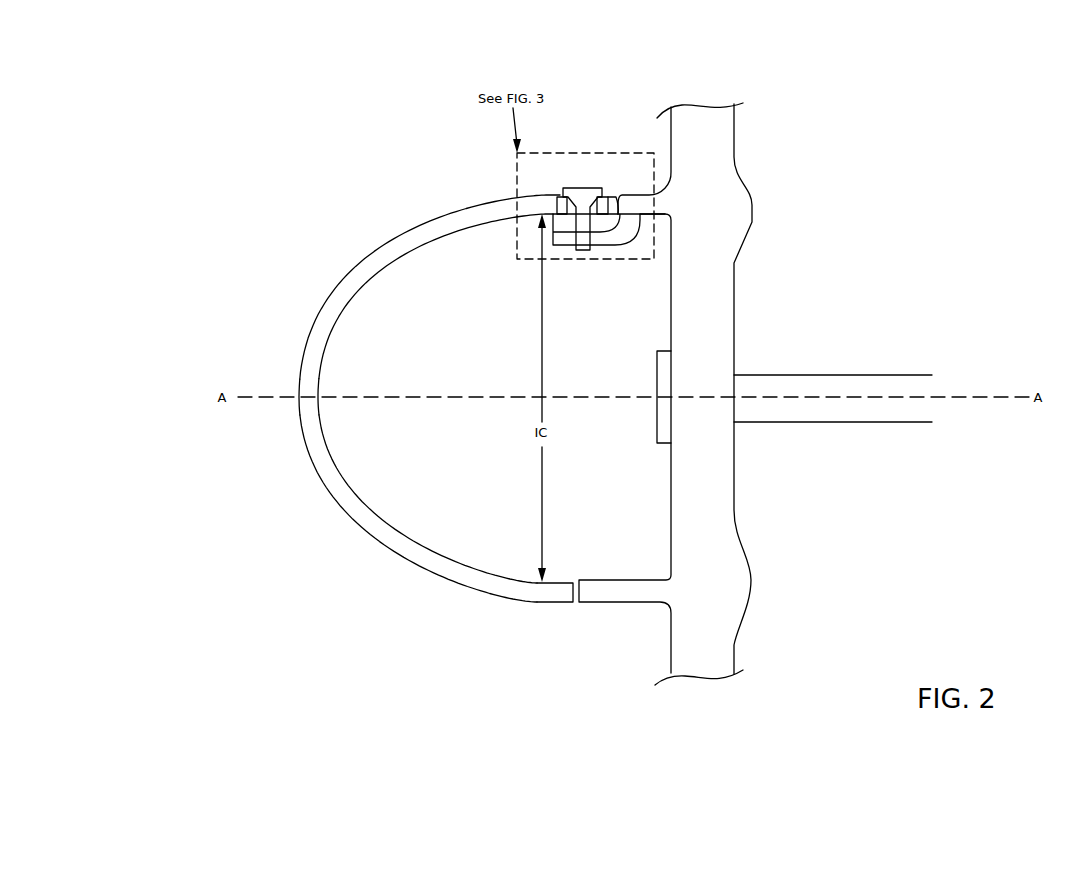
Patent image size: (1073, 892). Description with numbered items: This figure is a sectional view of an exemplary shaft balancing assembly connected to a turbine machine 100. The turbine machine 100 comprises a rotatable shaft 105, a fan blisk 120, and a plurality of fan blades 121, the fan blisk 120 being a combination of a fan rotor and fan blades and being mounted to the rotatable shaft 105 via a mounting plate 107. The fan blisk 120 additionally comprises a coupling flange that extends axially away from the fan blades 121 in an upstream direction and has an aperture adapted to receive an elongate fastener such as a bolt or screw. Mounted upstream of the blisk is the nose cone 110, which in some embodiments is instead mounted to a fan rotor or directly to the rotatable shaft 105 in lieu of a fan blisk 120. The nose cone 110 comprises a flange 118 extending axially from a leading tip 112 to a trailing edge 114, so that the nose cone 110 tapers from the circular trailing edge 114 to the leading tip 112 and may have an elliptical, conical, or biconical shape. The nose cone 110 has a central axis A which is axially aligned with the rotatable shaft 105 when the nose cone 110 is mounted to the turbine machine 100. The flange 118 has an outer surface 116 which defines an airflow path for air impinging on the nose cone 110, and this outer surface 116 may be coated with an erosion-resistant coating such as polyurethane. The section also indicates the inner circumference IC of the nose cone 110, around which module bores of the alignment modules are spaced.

The turbine machine 100 is at (860, 508).
The rotatable shaft 105 is at (830, 374).
The mounting plate 107 is at (657, 441).
The nose cone 110 is at (345, 228).
The leading tip 112 is at (297, 398).
The trailing edge 114 is at (565, 626).
The outer surface 116 is at (414, 567).
The flange 118 is at (325, 323).
The fan blisk 120 is at (735, 518).
The fan blades 121 is at (735, 138).